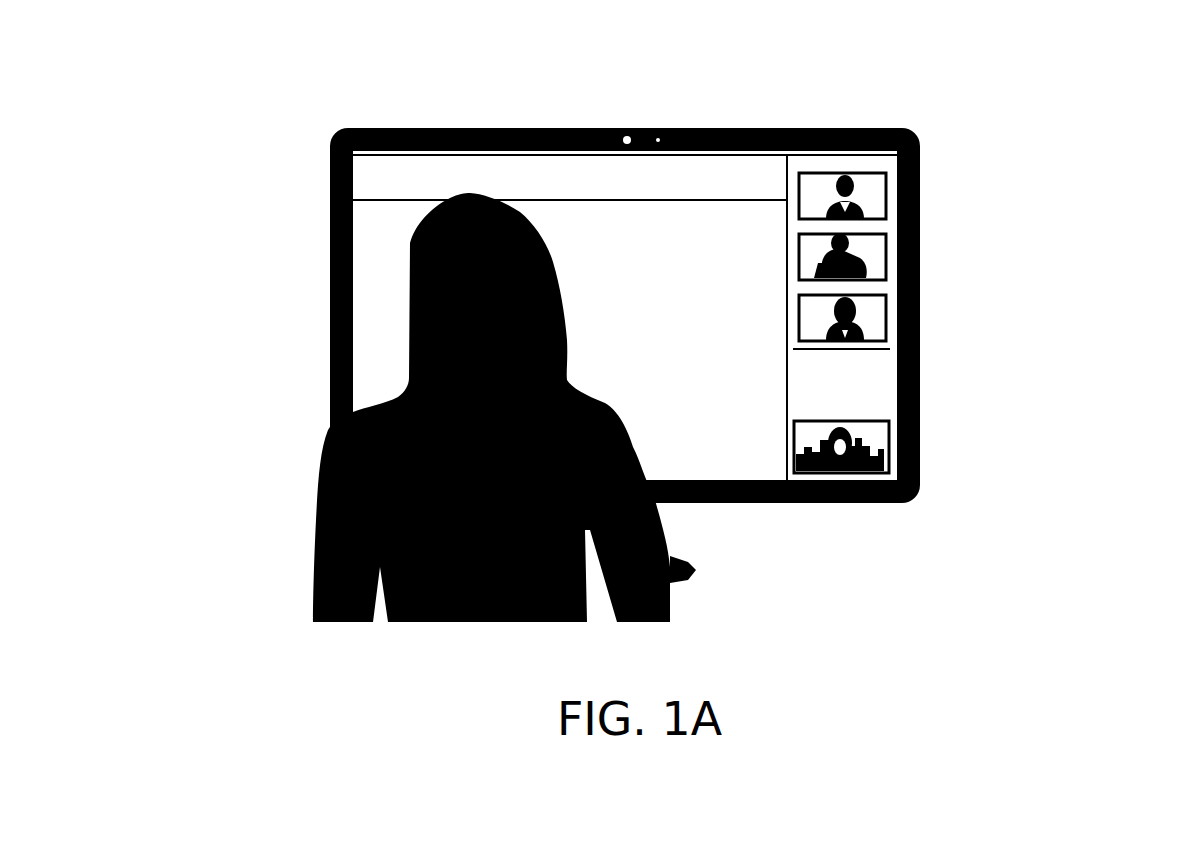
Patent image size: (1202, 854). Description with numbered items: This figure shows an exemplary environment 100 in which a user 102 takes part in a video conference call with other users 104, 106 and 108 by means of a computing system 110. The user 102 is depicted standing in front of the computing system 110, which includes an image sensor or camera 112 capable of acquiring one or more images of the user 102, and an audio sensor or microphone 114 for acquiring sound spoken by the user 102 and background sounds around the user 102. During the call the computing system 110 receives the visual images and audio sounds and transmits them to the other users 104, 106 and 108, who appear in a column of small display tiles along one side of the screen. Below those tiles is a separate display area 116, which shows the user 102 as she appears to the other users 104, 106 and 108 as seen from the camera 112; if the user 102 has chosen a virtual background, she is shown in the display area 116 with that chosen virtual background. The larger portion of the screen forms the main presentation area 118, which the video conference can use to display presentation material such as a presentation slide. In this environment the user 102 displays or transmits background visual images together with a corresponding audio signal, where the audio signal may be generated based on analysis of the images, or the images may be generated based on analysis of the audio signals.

The presentation environment / system 100 is at (1102, 124).
The user 102 is at (313, 558).
The other user 104 is at (860, 188).
The other user 106 is at (868, 252).
The other user 108 is at (858, 313).
The computing system 110 is at (831, 129).
The camera 112 is at (625, 136).
The microphone 114 is at (661, 138).
The display area 116 is at (877, 437).
The main presentation area 118 is at (570, 233).